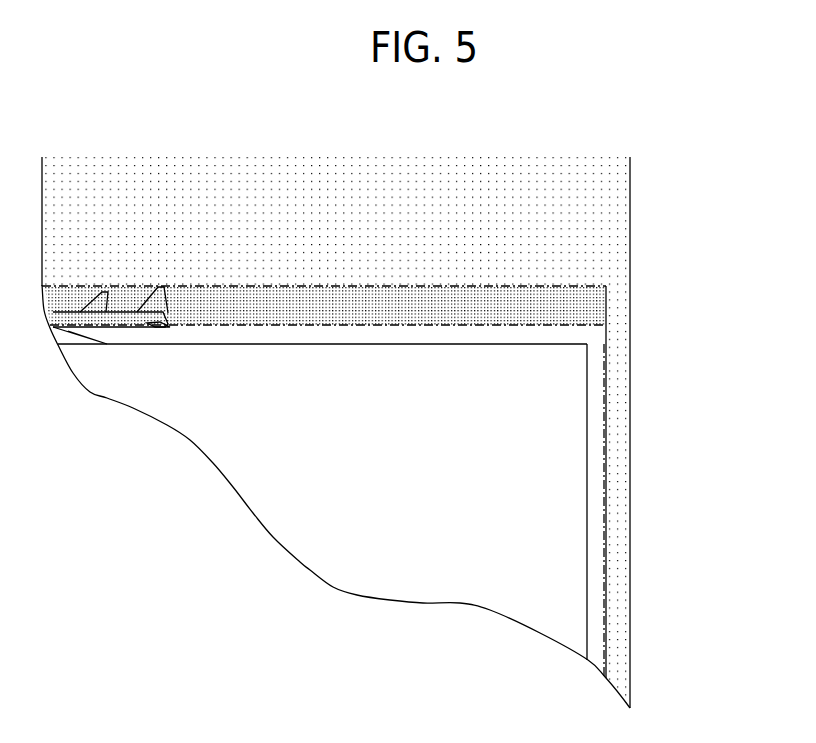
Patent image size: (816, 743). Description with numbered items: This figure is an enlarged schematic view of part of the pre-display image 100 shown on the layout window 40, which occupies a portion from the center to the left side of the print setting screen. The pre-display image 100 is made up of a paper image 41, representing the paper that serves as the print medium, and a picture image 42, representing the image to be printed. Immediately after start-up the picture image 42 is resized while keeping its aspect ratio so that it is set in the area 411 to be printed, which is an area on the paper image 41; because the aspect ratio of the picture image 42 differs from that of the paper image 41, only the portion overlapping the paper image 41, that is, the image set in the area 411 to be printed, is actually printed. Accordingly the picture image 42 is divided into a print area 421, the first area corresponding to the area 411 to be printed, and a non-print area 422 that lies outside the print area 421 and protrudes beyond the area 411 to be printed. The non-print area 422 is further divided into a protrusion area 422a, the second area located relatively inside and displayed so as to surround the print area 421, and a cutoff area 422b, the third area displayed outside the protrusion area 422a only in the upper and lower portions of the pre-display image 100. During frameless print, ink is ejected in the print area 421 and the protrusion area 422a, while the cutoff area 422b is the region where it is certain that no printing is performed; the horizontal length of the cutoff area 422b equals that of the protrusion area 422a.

The layout window 40 is at (654, 119).
The pre-display image 100 is at (425, 399).
The picture image 42 is at (555, 286).
The paper image 41 is at (589, 352).
The area to be printed 411 is at (567, 415).
The print area 421 is at (570, 482).
The non-print area 422 is at (680, 511).
The protrusion area 422a is at (597, 507).
The cutoff area 422b is at (613, 550).